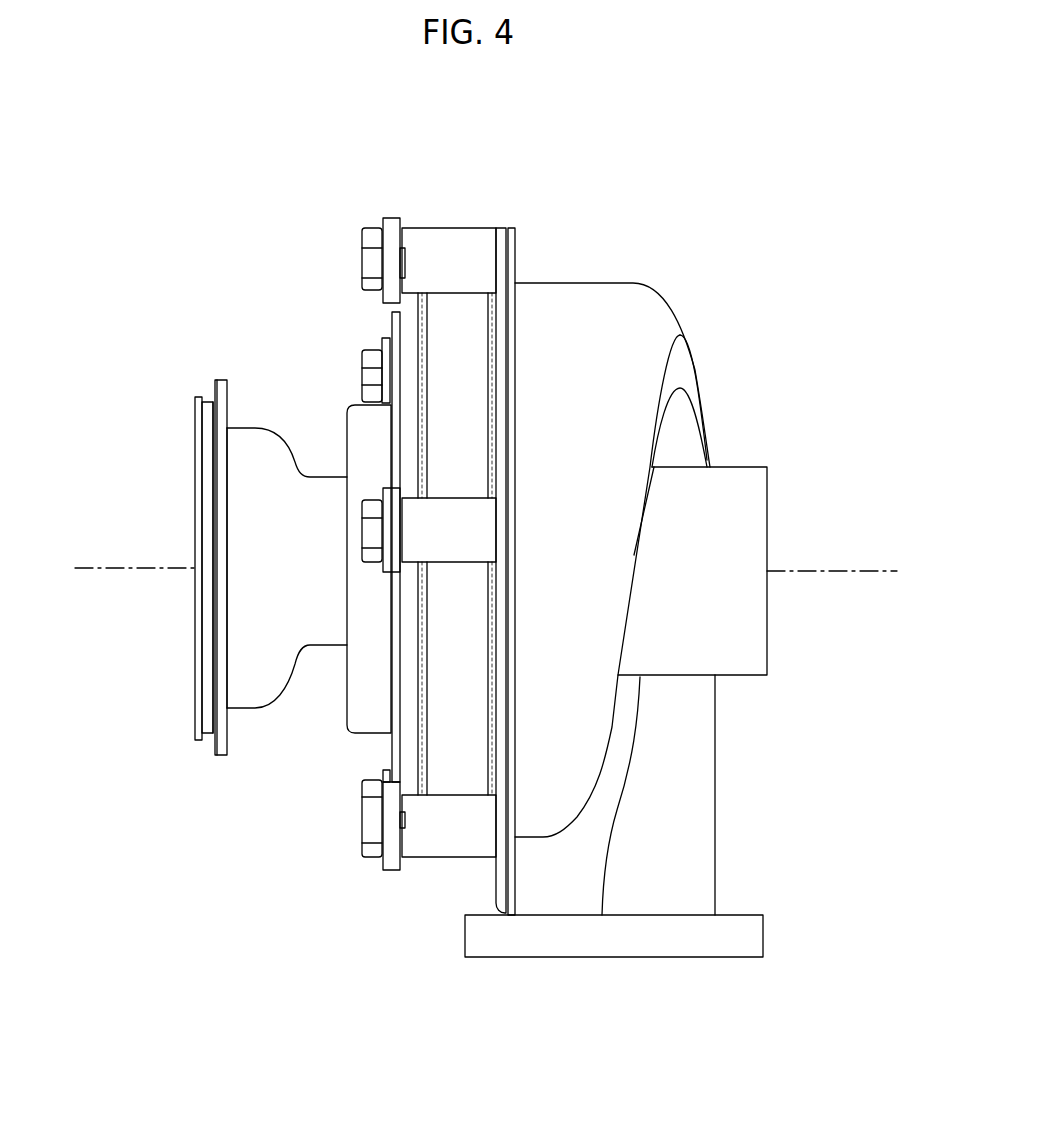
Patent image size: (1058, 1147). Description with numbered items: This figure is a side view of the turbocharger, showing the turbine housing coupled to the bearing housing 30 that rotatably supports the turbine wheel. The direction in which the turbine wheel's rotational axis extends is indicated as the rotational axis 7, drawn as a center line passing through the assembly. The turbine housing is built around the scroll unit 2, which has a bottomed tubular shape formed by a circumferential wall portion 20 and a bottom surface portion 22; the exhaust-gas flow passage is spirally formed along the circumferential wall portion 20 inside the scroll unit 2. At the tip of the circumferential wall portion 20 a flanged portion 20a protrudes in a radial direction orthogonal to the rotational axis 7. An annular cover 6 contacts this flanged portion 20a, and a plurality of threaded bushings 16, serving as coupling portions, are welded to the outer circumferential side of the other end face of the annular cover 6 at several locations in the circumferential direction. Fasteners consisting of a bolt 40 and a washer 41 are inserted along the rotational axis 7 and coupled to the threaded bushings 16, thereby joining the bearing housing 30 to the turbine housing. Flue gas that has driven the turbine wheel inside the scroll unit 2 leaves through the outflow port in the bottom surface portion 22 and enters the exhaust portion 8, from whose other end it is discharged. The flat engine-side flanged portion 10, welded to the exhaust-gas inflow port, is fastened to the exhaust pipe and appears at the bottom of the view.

The scroll unit 2 is at (680, 225).
The annular cover 6 is at (497, 228).
The rotational axis 7 is at (828, 570).
The exhaust portion 8 is at (745, 467).
The engine-side flanged portion 10 is at (677, 945).
The threaded bushing 16 is at (456, 243).
The circumferential wall portion 20 is at (577, 300).
The flanged portion 20a is at (510, 228).
The bottom surface portion 22 is at (670, 320).
The bearing housing 30 is at (243, 428).
The bolt 40 is at (372, 257).
The washer 41 is at (395, 217).